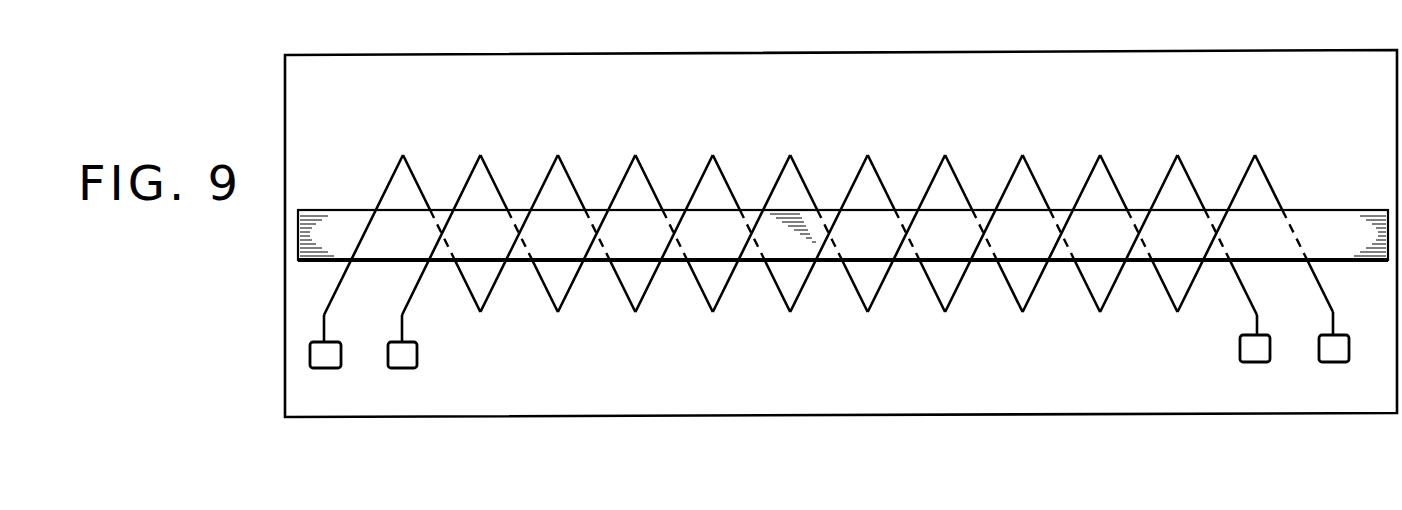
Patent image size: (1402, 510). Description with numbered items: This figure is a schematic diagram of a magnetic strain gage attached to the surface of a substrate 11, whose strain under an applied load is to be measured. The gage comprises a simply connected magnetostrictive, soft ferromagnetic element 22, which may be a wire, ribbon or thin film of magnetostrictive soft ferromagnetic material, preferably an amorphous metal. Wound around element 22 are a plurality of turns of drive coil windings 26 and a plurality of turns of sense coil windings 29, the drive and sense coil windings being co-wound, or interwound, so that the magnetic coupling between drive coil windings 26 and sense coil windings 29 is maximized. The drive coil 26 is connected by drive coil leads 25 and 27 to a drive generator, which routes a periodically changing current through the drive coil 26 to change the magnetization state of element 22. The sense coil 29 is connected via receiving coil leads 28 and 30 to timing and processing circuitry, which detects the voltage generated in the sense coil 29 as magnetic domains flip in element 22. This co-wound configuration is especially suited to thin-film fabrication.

The substrate 11 is at (1256, 65).
The magnetostrictive, soft ferromagnetic element 22 is at (1312, 213).
The drive coil lead 25 is at (327, 326).
The drive coil 26 is at (390, 180).
The drive coil lead 27 is at (1254, 320).
The receiving coil lead 28 is at (404, 323).
The sense coil 29 is at (471, 175).
The receiving coil lead 30 is at (1329, 320).